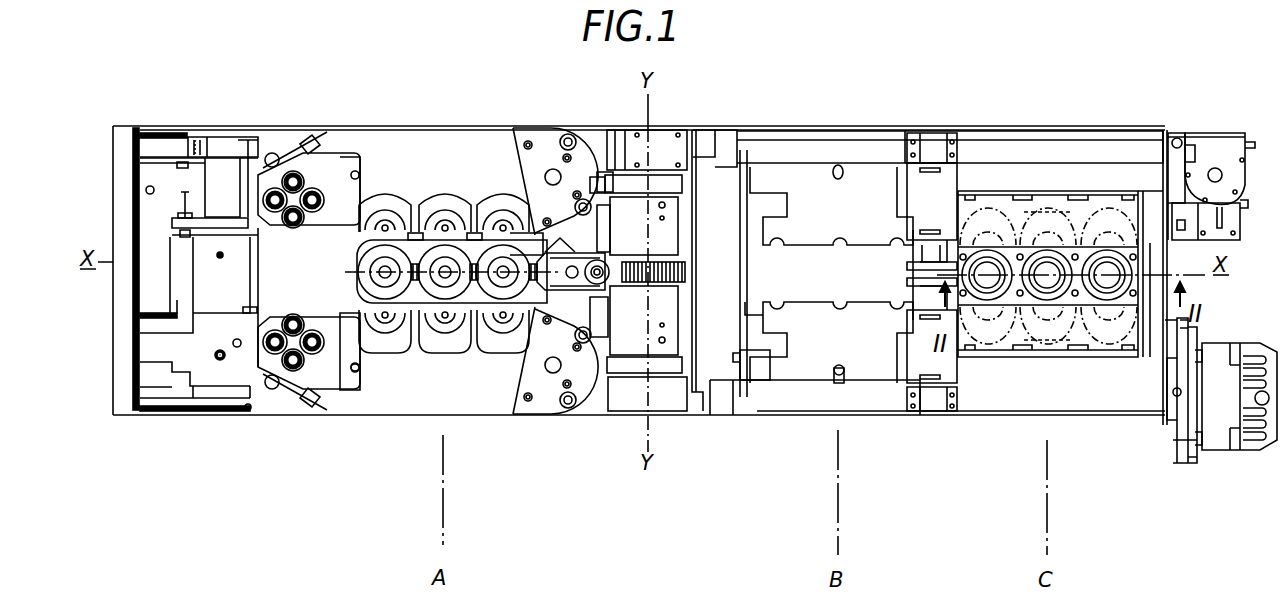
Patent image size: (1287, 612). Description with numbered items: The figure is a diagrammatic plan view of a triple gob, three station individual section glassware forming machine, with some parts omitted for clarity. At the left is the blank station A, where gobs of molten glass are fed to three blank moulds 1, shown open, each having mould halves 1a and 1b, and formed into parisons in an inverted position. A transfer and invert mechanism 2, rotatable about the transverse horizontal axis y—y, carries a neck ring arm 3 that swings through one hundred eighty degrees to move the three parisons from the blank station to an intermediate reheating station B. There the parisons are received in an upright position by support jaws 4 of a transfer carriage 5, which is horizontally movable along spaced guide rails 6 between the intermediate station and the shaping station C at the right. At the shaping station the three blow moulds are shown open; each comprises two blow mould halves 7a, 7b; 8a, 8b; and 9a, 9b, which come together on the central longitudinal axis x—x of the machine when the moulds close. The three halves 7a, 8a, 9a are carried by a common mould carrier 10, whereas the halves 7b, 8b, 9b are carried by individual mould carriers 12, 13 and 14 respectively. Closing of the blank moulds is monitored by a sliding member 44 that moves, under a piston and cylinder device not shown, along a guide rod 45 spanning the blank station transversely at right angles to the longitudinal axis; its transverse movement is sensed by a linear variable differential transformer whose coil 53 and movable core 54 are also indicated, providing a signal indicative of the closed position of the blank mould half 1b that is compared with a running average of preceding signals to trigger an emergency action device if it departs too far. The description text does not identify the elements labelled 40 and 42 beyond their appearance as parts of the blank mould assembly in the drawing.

The blank moulds 1 is at (452, 269).
The mould half 1a is at (425, 200).
The mould half 1b is at (383, 345).
The transfer and invert mechanism 2 is at (692, 242).
The neck ring arm 3 is at (437, 302).
The support jaws 4 is at (838, 348).
The transfer carriage 5 is at (862, 155).
The guide rails 6 is at (980, 150).
The blow mould half 7a is at (988, 212).
The blow mould half 7b is at (985, 338).
The blow mould half 8a is at (1040, 212).
The blow mould half 8b is at (1058, 338).
The blow mould half 9a is at (1112, 212).
The blow mould half 9b is at (1122, 338).
The common mould carrier 10 is at (1058, 212).
The individual mould carrier 12 is at (997, 355).
The individual mould carrier 13 is at (1040, 338).
The individual mould carrier 14 is at (1050, 314).
The upper roller block 40 is at (345, 156).
The lower roller block 42 is at (337, 382).
The sliding member 44 is at (250, 283).
The guide rod 45 is at (222, 170).
The coil 53 is at (190, 140).
The movable core 54 is at (140, 204).